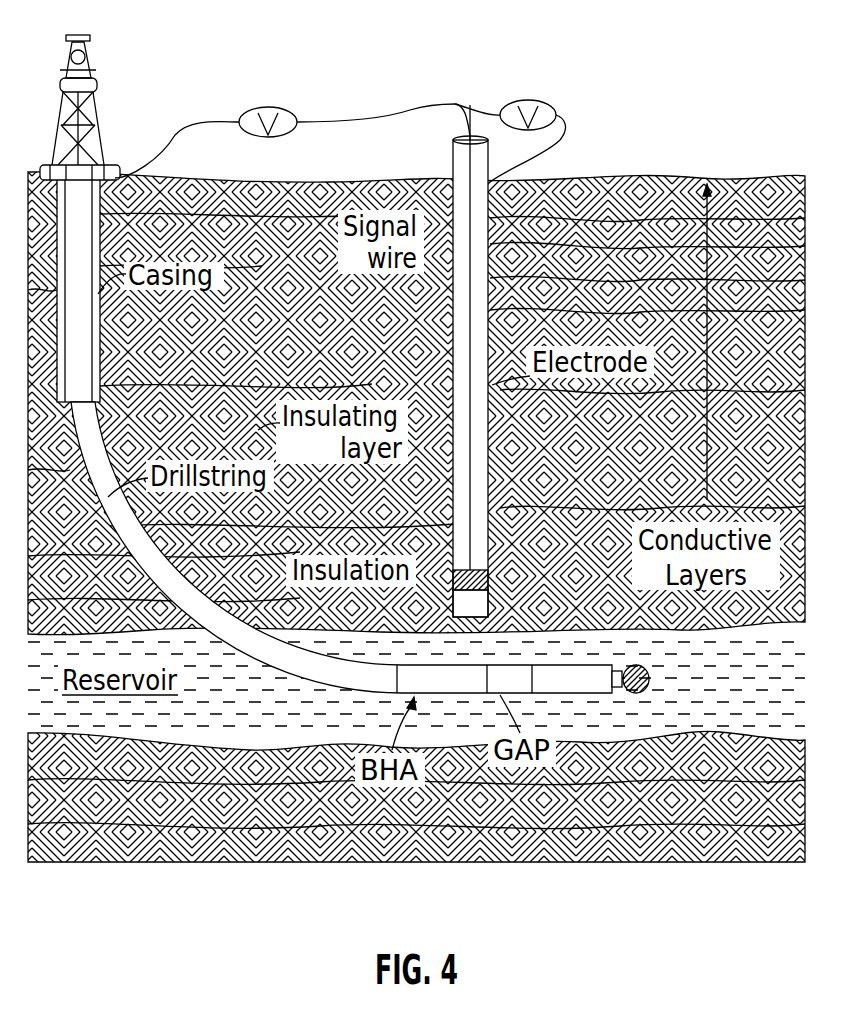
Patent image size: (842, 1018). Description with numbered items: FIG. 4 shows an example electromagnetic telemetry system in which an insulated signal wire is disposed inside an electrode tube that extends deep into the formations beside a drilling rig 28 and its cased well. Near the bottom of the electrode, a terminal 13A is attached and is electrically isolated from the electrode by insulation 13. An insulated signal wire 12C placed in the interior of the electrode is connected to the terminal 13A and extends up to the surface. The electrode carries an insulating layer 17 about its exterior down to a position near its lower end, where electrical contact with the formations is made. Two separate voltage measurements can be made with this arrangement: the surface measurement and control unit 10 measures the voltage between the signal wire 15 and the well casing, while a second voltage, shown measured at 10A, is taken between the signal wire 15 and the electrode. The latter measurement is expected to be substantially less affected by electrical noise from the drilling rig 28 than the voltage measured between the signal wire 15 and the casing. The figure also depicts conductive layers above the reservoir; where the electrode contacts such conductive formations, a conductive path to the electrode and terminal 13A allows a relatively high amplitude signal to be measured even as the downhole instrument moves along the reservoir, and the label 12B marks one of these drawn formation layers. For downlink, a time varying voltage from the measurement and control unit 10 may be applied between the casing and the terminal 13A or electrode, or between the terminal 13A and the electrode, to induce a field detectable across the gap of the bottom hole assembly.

The drilling rig 28 is at (78, 35).
The surface measurement and control unit 10 is at (268, 107).
The voltage measurement between signal wire and electrode 10A is at (528, 100).
The conductive layer 12B is at (490, 290).
The insulated signal wire 12C is at (490, 232).
The signal wire 15 is at (464, 276).
The insulating layer 17 is at (448, 402).
The insulation 13 is at (448, 596).
The terminal 13A is at (492, 577).